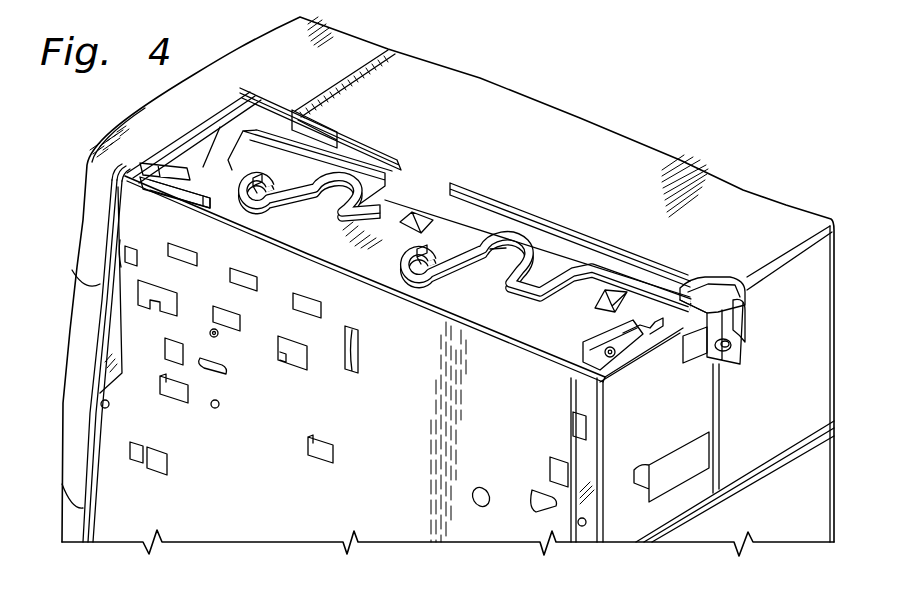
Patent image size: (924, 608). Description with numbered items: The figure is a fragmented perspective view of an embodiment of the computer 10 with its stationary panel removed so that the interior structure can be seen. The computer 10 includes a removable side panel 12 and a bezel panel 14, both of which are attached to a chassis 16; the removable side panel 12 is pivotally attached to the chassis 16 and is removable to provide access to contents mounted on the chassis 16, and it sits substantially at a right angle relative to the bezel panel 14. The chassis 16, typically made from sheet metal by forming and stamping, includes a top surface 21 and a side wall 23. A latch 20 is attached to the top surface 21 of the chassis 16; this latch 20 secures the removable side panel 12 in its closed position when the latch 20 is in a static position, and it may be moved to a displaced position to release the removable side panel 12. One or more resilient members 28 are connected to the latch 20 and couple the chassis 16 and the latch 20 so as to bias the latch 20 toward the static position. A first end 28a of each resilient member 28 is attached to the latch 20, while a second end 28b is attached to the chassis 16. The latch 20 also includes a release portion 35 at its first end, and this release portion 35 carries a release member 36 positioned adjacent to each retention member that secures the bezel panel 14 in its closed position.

The computer 10 is at (599, 110).
The removable side panel 12 is at (738, 192).
The bezel panel 14 is at (88, 210).
The chassis 16 is at (578, 455).
The latch 20 is at (409, 178).
The top surface 21 is at (571, 339).
The side wall 23 is at (374, 433).
The resilient member 28 is at (283, 203).
The first end 28a is at (563, 267).
The second end 28b is at (440, 231).
The release portion 35 is at (258, 124).
The release member 36 is at (192, 193).